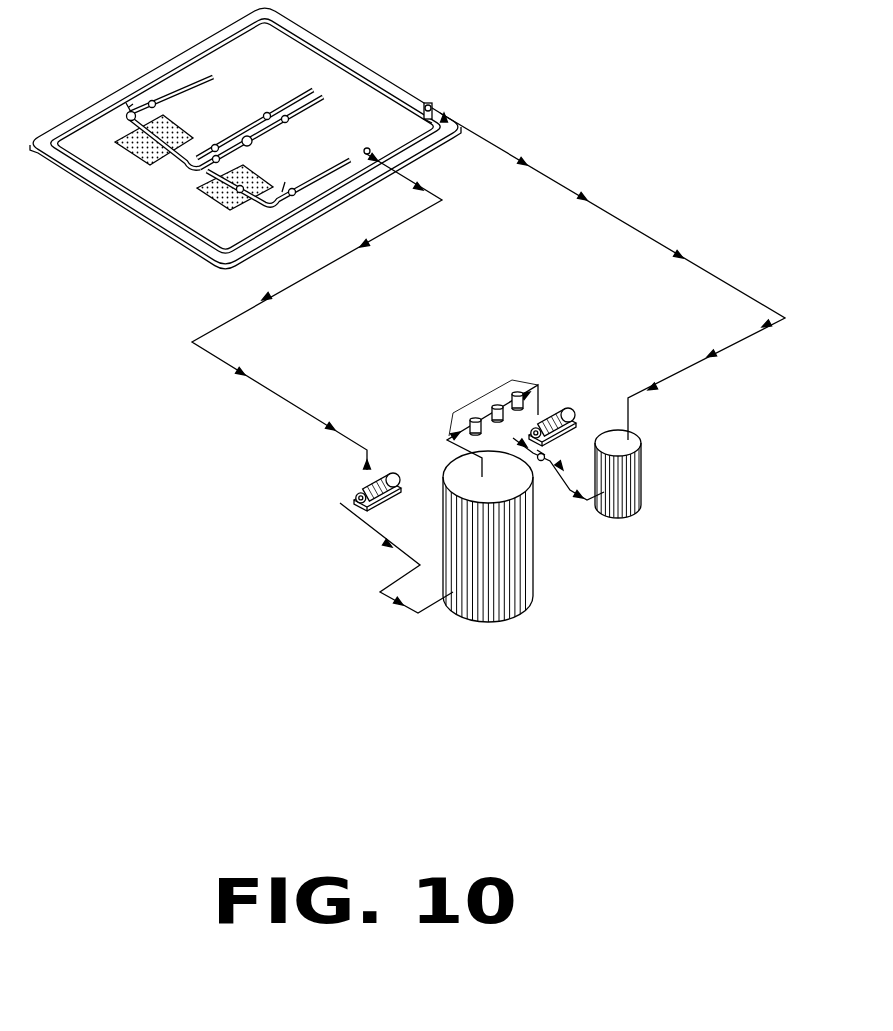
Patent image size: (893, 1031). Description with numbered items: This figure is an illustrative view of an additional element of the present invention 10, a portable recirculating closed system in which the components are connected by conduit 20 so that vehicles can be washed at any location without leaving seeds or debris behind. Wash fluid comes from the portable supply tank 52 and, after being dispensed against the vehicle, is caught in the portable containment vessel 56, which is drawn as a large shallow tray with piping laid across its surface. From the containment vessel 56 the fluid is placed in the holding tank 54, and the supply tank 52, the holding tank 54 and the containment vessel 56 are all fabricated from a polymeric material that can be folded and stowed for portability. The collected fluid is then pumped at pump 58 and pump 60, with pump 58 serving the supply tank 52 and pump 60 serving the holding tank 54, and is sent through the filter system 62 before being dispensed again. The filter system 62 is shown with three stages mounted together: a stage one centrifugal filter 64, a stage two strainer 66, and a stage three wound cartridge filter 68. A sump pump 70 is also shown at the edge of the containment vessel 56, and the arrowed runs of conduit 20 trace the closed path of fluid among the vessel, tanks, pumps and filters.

The present invention 10 is at (630, 153).
The conduit 20 is at (543, 173).
The portable supply tank 52 is at (528, 610).
The holding tank 54 is at (635, 510).
The portable containment vessel 56 is at (32, 167).
The pump 58 is at (360, 482).
The pump 60 is at (563, 403).
The filter system 62 is at (466, 284).
The stage 1 centrifugal filter 64 is at (517, 390).
The stage 2 strainer 66 is at (499, 402).
The stage 3 wound cartridge filter 68 is at (456, 431).
The sump pump 70 is at (432, 103).